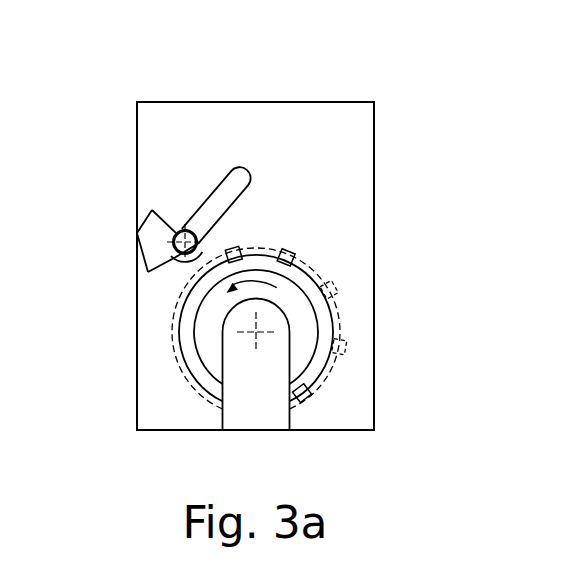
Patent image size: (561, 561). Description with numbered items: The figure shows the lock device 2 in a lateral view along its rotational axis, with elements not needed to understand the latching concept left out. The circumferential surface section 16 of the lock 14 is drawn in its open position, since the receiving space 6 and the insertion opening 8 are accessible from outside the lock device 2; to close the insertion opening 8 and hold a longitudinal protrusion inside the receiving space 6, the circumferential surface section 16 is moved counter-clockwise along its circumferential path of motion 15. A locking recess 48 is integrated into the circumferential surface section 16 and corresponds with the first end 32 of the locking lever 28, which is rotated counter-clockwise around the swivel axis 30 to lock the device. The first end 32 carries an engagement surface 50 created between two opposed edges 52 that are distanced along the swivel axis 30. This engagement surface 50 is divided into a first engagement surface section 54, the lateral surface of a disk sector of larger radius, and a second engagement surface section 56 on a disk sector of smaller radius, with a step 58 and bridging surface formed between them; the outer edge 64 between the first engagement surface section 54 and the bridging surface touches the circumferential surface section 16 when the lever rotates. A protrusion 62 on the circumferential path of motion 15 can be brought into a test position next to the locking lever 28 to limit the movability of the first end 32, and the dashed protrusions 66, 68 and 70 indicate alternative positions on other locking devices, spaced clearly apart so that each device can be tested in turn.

The lock device 2 is at (297, 92).
The receiving space 6 is at (234, 361).
The insertion opening 8 is at (232, 430).
The lock 14 is at (303, 276).
The circumferential path of motion 15 is at (200, 395).
The circumferential surface section 16 is at (345, 313).
The locking lever 28 is at (198, 189).
The swivel axis 30 is at (185, 242).
The first end 32 is at (124, 271).
The locking recess 48 is at (308, 396).
The engagement surface 50 is at (138, 289).
The opposed edges 52 is at (137, 243).
The first engagement surface section 54 is at (122, 250).
The second engagement surface section 56 is at (163, 274).
The step 58 is at (151, 282).
The protrusion 62 is at (237, 250).
The outer edge 64 is at (147, 254).
The protrusion 66 is at (287, 254).
The protrusion 68 is at (330, 287).
The protrusion 70 is at (342, 344).